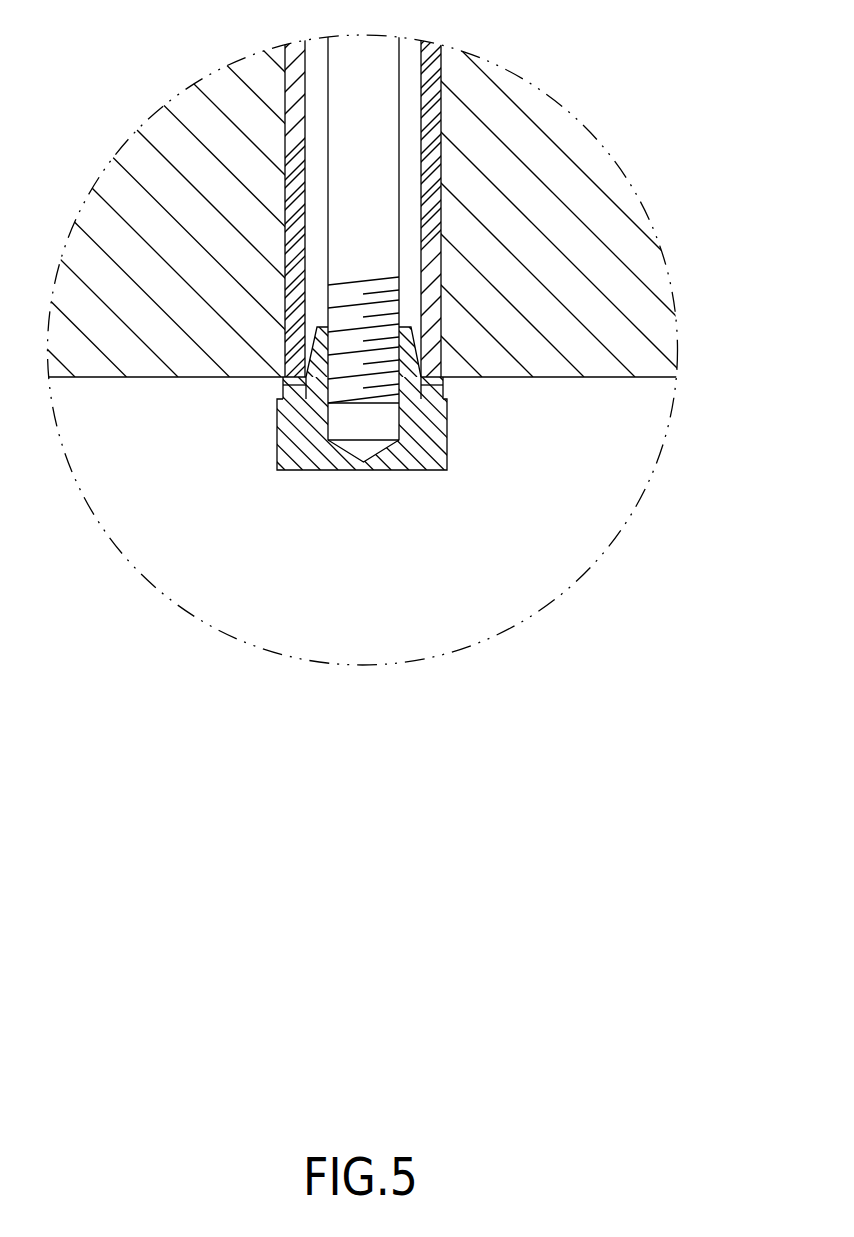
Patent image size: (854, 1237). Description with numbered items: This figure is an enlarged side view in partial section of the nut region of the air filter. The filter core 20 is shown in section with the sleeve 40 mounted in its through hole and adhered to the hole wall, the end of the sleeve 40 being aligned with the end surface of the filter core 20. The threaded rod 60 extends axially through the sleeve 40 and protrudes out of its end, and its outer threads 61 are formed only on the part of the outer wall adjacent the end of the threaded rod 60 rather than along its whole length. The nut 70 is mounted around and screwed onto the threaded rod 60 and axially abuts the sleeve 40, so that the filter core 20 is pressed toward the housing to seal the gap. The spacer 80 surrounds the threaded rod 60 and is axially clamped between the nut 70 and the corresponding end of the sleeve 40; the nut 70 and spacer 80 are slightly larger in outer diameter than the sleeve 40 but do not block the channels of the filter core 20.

The filter core 20 is at (635, 265).
The sleeve 40 is at (430, 182).
The threaded rod 60 is at (405, 98).
The outer threads 61 is at (363, 383).
The nut 70 is at (323, 460).
The spacer 80 is at (300, 380).